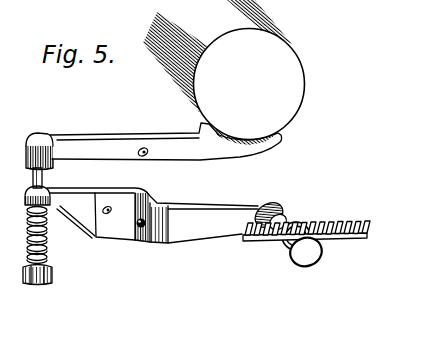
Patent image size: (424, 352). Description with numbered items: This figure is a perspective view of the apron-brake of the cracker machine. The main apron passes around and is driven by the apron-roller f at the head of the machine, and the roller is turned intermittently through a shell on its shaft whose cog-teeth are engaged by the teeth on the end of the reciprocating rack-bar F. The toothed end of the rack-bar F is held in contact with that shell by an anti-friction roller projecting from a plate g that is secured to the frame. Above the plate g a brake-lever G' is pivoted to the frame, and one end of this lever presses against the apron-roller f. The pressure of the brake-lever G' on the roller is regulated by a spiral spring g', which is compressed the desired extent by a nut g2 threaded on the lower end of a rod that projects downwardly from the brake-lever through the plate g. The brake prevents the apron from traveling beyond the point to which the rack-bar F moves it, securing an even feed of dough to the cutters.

The apron-roller f is at (249, 84).
The brake-lever G' is at (154, 153).
The plate g is at (168, 229).
The spiral spring g' is at (47, 235).
The nut g2 is at (37, 288).
The reciprocating rack-bar F is at (357, 241).